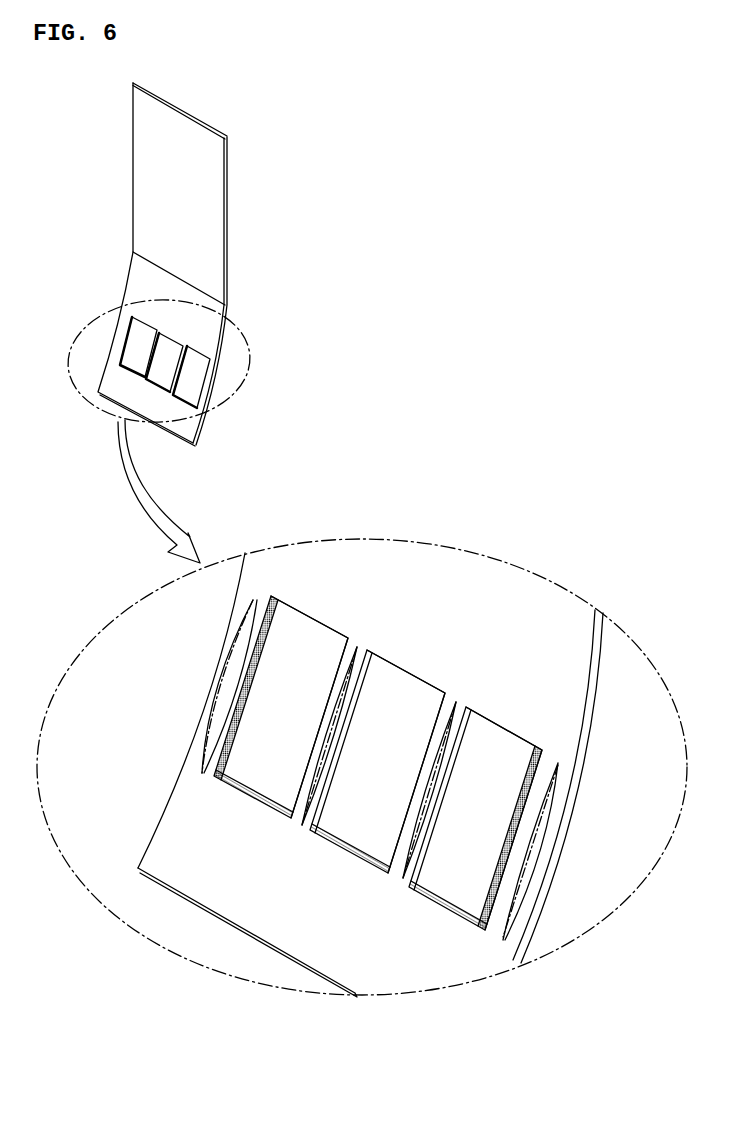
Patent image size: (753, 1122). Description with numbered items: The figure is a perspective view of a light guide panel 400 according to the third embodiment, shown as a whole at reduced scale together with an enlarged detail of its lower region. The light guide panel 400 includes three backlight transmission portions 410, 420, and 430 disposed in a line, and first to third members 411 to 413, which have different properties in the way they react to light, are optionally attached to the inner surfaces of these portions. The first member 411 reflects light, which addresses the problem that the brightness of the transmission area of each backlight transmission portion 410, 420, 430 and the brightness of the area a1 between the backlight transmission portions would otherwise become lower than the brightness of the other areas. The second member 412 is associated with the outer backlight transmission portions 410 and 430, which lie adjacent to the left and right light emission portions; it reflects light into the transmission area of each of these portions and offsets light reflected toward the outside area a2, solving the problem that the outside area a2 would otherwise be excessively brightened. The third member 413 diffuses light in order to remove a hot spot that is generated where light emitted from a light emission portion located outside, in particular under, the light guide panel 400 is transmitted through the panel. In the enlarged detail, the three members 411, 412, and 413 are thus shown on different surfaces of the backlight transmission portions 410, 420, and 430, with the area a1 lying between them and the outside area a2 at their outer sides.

The light guide panel 400 is at (263, 180).
The backlight transmission portion 410 is at (135, 357).
The backlight transmission portion 420 is at (161, 373).
The backlight transmission portion 430 is at (190, 390).
The first member 411 is at (317, 737).
The second member 412 is at (263, 668).
The third member 413 is at (280, 809).
The area between the backlight transmission portions a1 is at (355, 648).
The outside area a2 is at (557, 760).